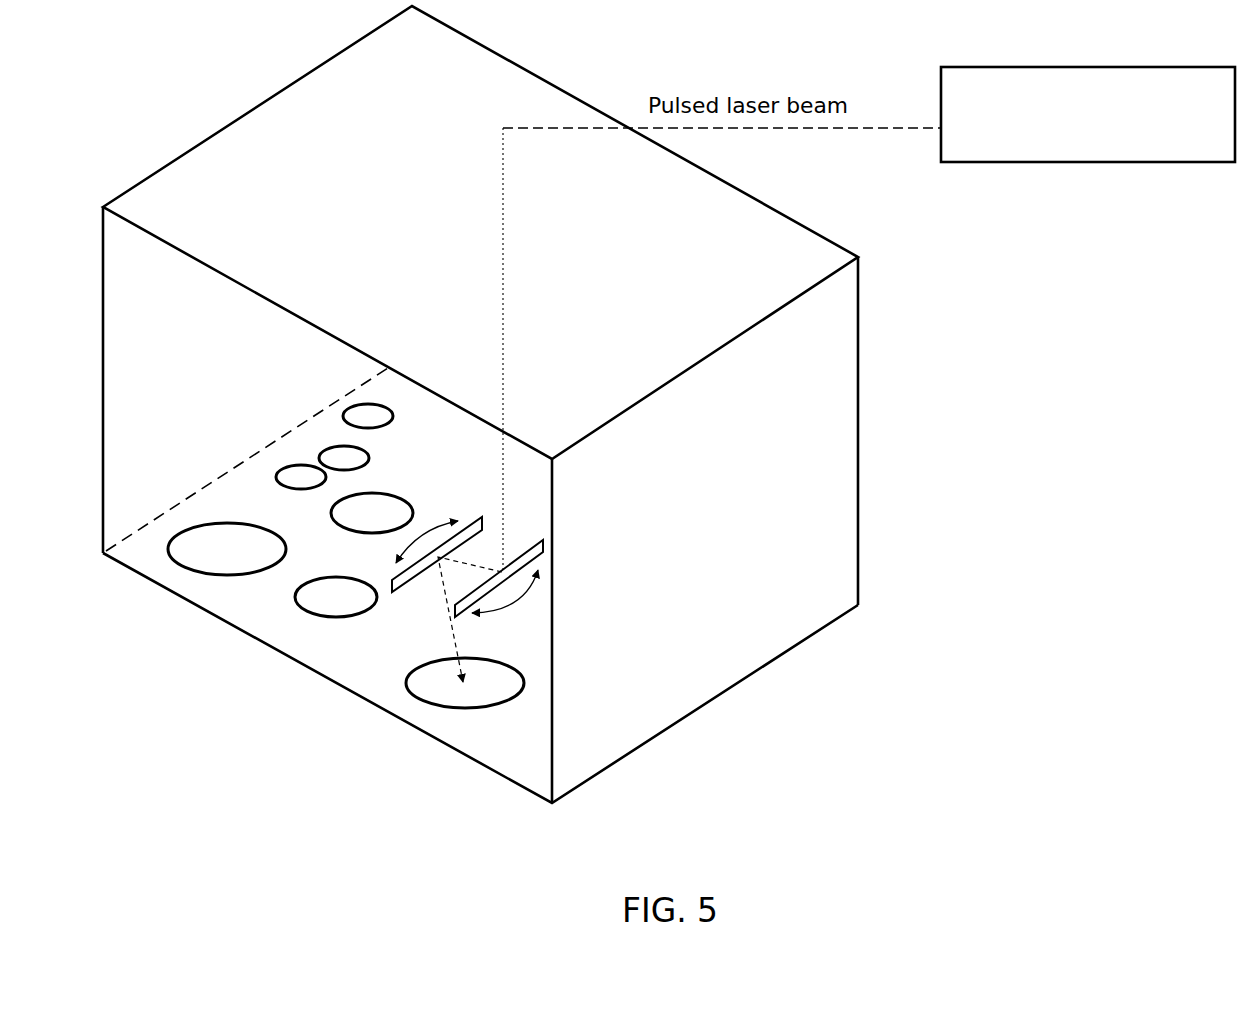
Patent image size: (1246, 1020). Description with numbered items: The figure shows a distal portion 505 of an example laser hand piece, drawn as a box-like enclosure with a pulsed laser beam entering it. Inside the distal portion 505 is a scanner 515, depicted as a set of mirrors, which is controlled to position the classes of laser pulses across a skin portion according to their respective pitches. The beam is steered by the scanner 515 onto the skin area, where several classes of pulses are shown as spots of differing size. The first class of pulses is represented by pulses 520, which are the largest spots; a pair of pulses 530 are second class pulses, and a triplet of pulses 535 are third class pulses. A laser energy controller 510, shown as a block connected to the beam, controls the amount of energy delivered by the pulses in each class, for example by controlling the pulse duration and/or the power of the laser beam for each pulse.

The distal portion 505 is at (861, 285).
The laser energy controller 510 is at (1105, 162).
The scanner 515 is at (520, 548).
The pulses 520 is at (262, 573).
The pair of pulses 530 is at (398, 497).
The triplet of pulses 535 is at (345, 412).